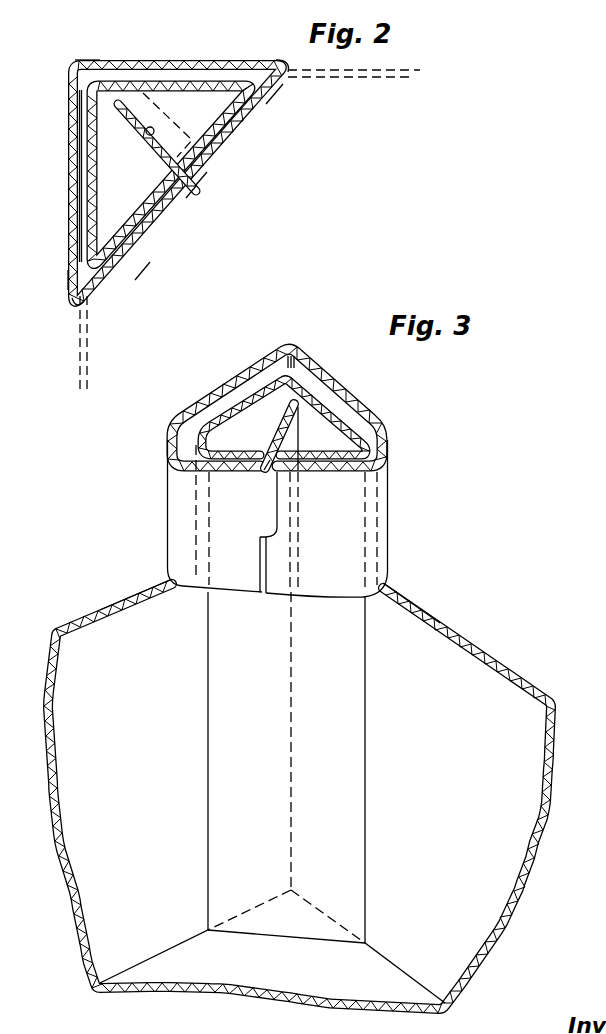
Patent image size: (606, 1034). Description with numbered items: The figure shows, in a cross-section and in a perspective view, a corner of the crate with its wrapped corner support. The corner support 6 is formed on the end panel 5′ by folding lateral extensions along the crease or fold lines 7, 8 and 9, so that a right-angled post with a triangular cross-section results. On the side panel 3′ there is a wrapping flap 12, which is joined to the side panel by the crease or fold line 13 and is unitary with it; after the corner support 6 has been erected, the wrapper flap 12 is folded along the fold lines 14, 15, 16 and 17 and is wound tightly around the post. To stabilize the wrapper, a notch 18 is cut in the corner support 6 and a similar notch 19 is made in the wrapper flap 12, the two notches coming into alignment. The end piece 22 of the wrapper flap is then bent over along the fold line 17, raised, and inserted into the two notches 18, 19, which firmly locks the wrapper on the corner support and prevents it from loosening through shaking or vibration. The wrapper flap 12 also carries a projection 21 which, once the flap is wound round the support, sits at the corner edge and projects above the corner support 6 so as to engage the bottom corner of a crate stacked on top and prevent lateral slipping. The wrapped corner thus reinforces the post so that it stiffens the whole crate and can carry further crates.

In FIG. 2, the side panel 3′ is at (80, 358).
In FIG. 3, the side panel 3′ is at (98, 611).
In FIG. 2, the end panel 5′ is at (413, 78).
In FIG. 3, the end panel 5′ is at (428, 612).
In FIG. 2, the corner support 6 is at (157, 243).
In FIG. 3, the corner support 6 is at (352, 763).
In FIG. 2, the fold line 7 is at (265, 98).
In FIG. 2, the fold line 8 is at (127, 265).
In FIG. 2, the fold line 9 is at (67, 94).
In FIG. 3, the wrapping flap 12 is at (387, 533).
In FIG. 2, the fold line 13 is at (100, 294).
In FIG. 2, the fold line 14 is at (288, 84).
In FIG. 2, the fold line 15 is at (68, 72).
In FIG. 2, the fold line 16 is at (76, 290).
In FIG. 2, the fold line 17 is at (195, 200).
In FIG. 3, the fold line 17 is at (265, 522).
In FIG. 2, the notch 18 is at (217, 158).
In FIG. 3, the notch 18 is at (292, 466).
In FIG. 2, the notch 19 is at (205, 173).
In FIG. 3, the notch 19 is at (268, 464).
In FIG. 3, the projection 21 is at (370, 410).
In FIG. 2, the end piece 22 is at (151, 136).
In FIG. 3, the end piece 22 is at (280, 432).